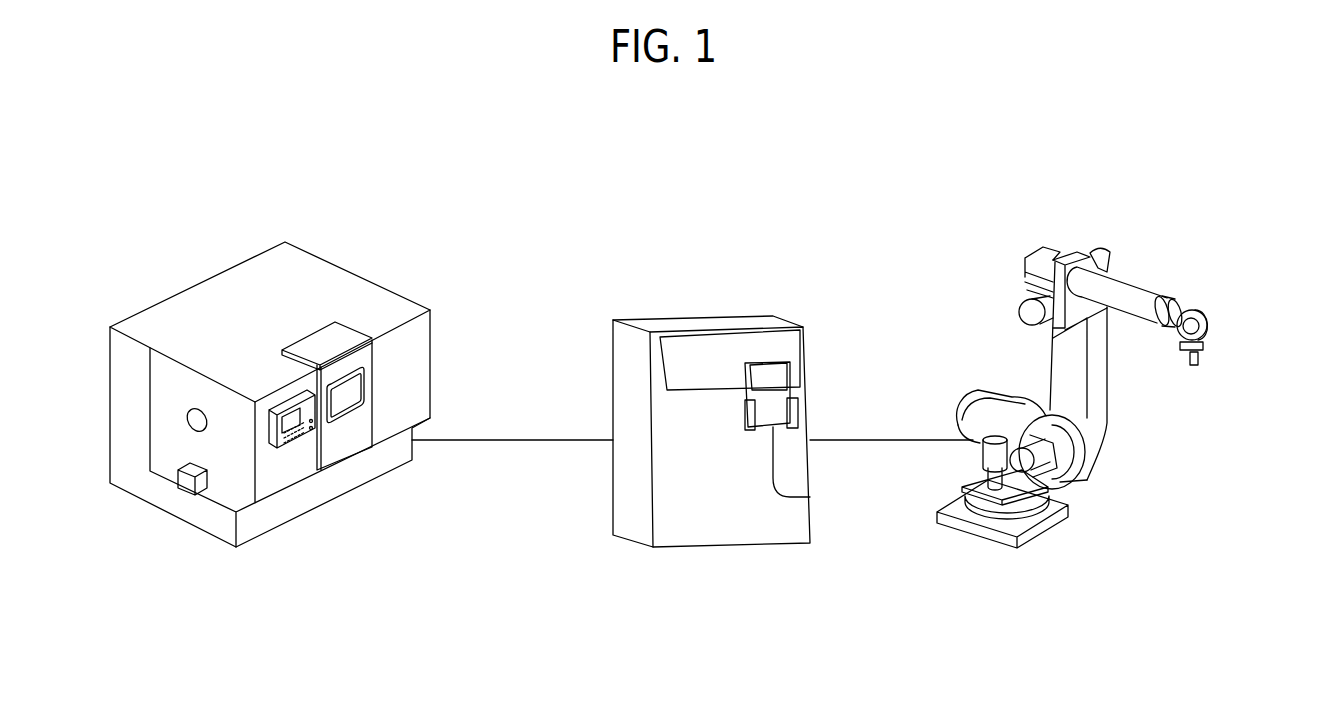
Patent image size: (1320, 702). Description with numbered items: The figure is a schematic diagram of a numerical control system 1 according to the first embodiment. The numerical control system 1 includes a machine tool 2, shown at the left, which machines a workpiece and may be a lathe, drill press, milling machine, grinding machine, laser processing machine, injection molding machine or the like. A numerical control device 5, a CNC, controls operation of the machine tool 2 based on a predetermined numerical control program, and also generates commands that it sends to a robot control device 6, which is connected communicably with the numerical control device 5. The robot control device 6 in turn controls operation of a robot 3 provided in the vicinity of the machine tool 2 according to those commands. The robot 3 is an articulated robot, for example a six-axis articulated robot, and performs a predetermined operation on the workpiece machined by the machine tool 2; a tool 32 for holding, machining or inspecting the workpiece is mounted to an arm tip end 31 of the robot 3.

The numerical control system 1 is at (1032, 136).
The machine tool 2 is at (363, 297).
The robot 3 is at (1098, 262).
The numerical control device 5 is at (297, 440).
The robot control device 6 is at (760, 323).
The arm tip end 31 is at (1203, 351).
The tool 32 is at (1196, 360).